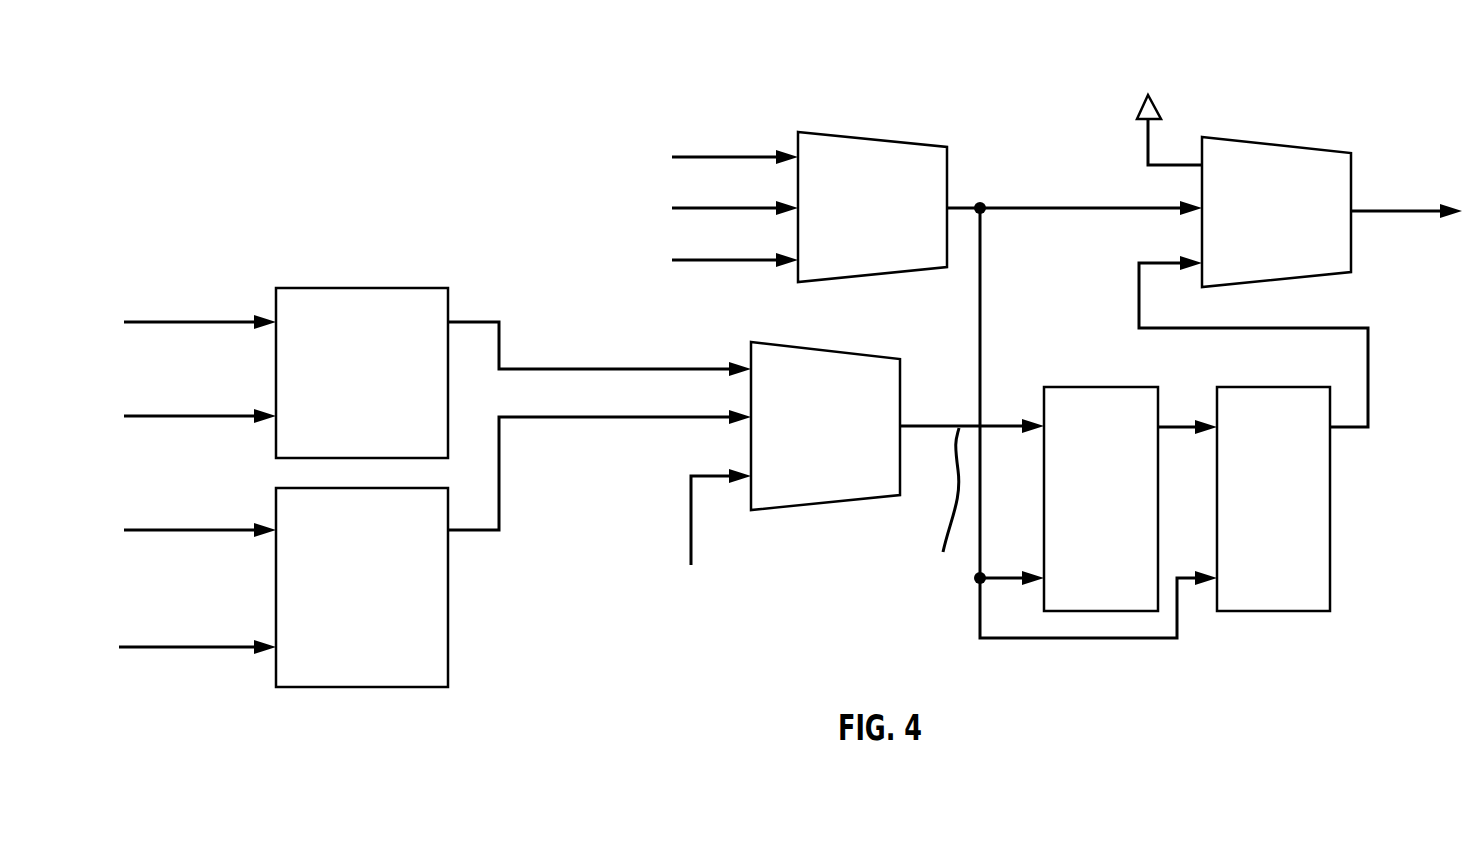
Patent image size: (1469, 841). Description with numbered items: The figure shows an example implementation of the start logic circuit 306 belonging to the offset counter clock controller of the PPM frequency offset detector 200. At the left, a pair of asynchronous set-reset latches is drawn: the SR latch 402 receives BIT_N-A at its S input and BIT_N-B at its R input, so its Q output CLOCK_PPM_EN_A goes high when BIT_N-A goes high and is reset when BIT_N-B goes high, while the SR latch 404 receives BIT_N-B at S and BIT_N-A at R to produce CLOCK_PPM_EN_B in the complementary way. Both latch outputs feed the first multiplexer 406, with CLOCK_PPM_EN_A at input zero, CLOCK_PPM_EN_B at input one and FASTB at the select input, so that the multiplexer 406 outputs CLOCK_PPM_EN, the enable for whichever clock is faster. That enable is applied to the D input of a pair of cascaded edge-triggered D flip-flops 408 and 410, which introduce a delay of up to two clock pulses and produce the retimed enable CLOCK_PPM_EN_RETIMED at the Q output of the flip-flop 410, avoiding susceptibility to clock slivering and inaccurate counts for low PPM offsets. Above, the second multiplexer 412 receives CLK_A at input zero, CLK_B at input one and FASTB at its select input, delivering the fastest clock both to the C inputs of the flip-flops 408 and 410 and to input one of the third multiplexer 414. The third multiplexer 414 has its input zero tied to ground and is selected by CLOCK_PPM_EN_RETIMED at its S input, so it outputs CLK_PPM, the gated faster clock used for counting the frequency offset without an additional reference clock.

The PPM frequency offset detector 200 is at (437, 38).
The start logic circuit 306 is at (414, 126).
The SR latch 402 is at (381, 404).
The SR latch 404 is at (381, 617).
The first multiplexer 406 is at (845, 442).
The D flip-flop 408 is at (1140, 511).
The D flip-flop 410 is at (1318, 511).
The second multiplexer 412 is at (890, 229).
The third multiplexer 414 is at (1282, 246).